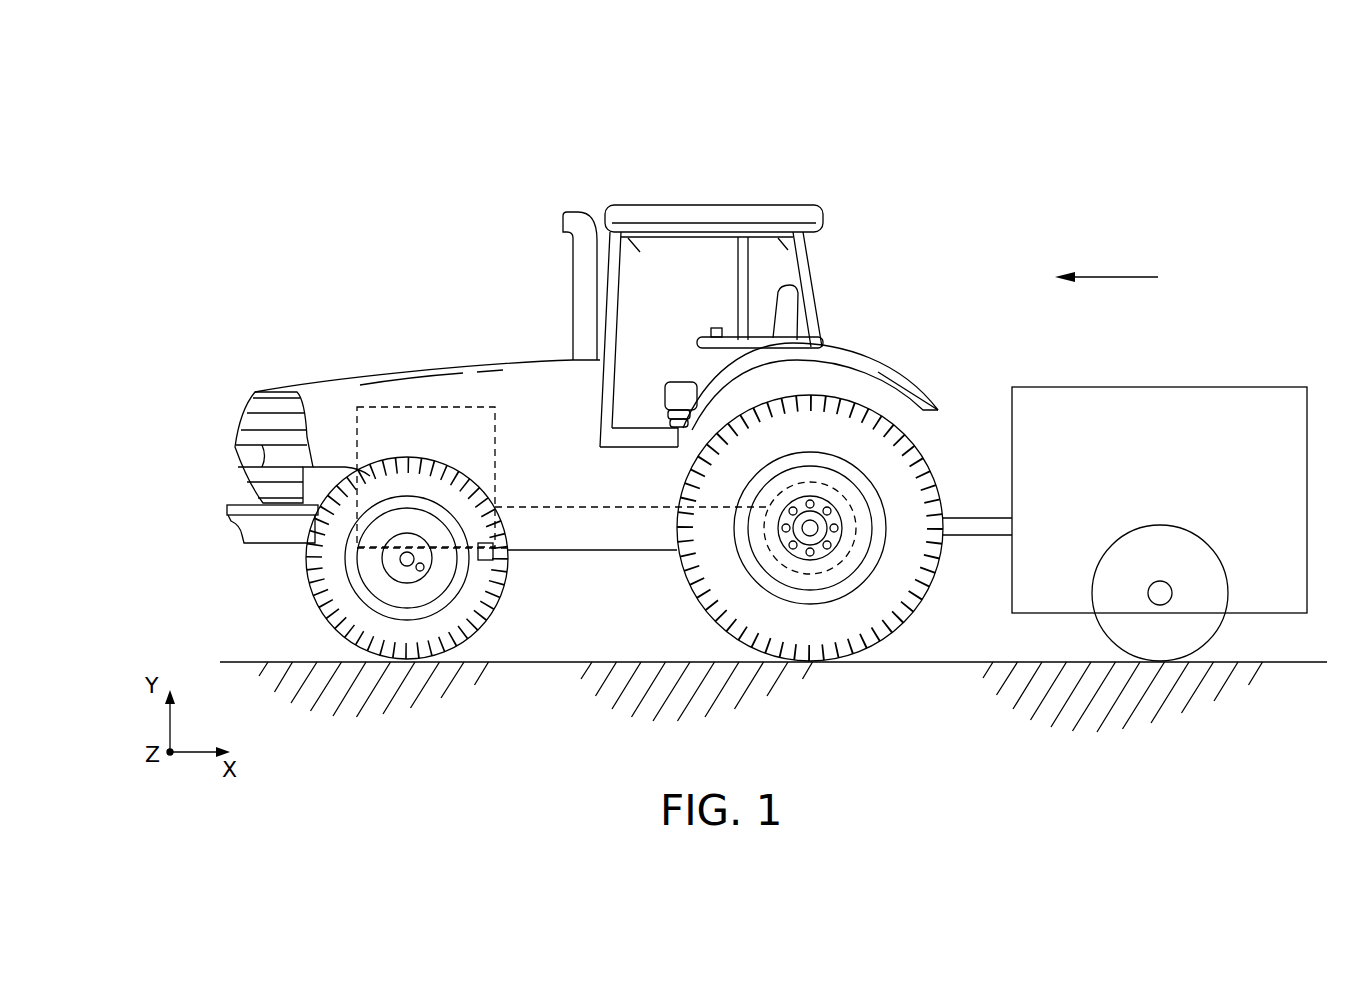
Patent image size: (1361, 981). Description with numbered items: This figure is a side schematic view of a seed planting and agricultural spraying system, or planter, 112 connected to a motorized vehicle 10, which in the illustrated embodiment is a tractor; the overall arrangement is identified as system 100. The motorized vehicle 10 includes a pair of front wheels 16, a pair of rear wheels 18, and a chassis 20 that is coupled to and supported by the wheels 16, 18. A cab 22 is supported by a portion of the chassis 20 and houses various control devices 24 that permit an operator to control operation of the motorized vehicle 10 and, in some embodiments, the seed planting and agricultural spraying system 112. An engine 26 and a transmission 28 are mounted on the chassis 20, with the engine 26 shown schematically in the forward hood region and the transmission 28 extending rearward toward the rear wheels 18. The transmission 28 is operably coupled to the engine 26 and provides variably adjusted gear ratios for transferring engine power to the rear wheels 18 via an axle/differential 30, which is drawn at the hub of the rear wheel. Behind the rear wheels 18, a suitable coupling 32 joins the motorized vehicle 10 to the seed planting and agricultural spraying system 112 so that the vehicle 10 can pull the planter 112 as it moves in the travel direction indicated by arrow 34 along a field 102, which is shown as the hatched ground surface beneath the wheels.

The motorized vehicle 10 is at (424, 246).
The work vehicle system 100 is at (1235, 176).
The arrow 34 is at (1120, 277).
The cab 22 is at (815, 282).
The control devices 24 is at (714, 328).
The engine 26 is at (400, 407).
The axle/differential 30 is at (850, 500).
The coupling 32 is at (950, 537).
The front wheels 16 is at (310, 590).
The transmission 28 is at (578, 507).
The chassis 20 is at (632, 550).
The rear wheels 18 is at (918, 602).
The seed planting and agricultural spraying system 112 is at (1182, 482).
The field 102 is at (1145, 705).